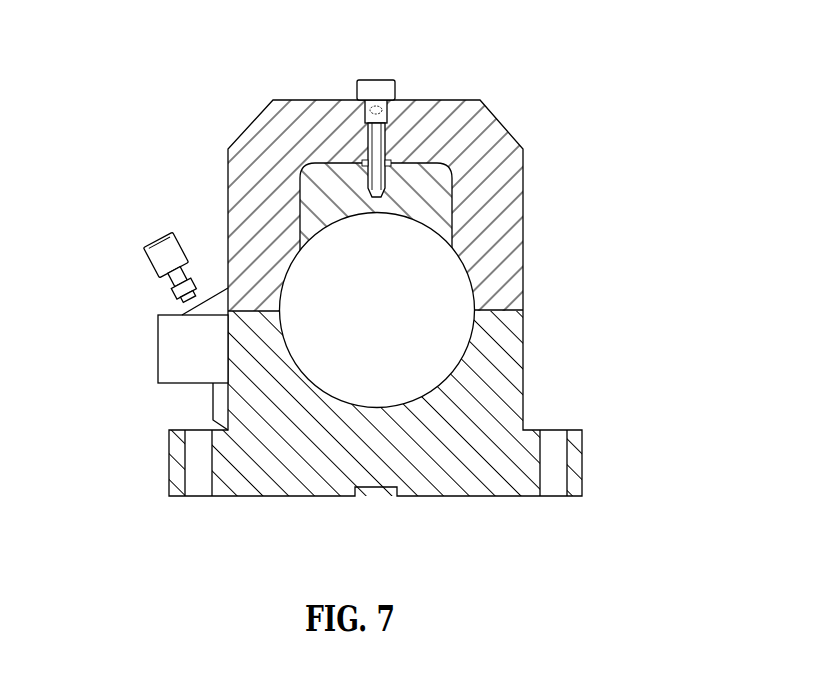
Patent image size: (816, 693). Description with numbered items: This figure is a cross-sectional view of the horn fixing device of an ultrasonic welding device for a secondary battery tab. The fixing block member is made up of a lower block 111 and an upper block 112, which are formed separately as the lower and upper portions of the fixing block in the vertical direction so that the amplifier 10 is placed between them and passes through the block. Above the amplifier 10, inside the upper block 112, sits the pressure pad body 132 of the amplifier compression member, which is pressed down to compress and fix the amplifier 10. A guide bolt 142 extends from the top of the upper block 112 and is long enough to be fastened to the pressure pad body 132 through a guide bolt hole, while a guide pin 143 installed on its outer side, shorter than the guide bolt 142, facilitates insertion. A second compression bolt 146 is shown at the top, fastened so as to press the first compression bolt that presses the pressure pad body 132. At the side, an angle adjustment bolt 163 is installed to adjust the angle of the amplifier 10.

The amplifier 10 is at (440, 332).
The lower block 111 is at (512, 367).
The upper block 112 is at (508, 263).
The pressure pad body 132 is at (432, 207).
The guide bolt 142 is at (386, 130).
The guide pin 143 is at (390, 162).
The second compression bolt 146 is at (386, 88).
The angle adjustment bolt 163 is at (155, 253).